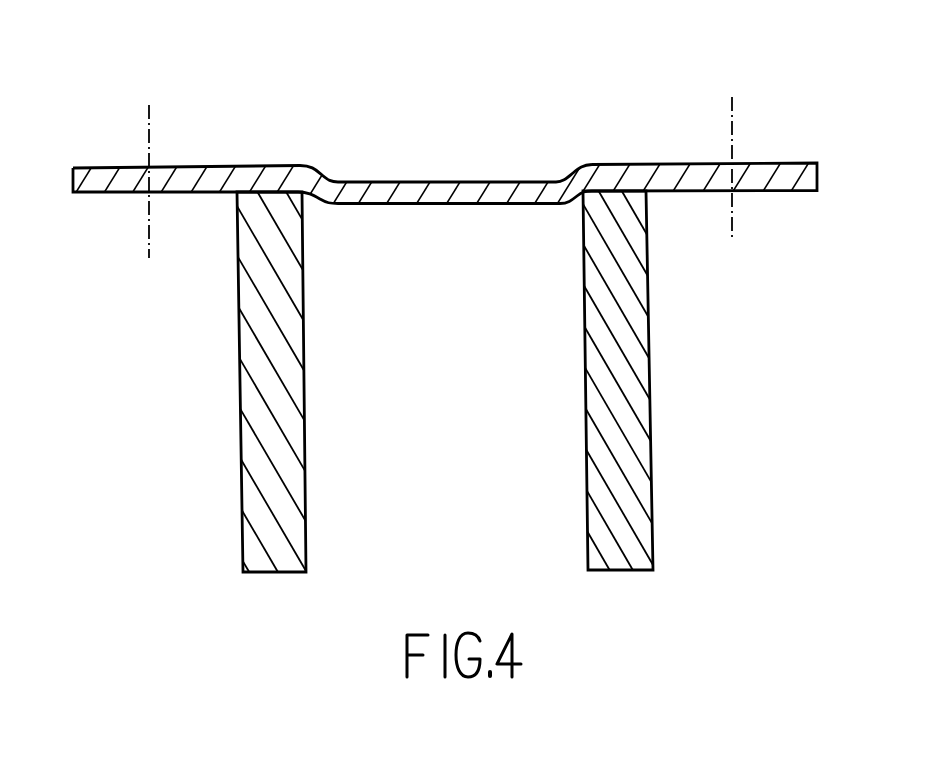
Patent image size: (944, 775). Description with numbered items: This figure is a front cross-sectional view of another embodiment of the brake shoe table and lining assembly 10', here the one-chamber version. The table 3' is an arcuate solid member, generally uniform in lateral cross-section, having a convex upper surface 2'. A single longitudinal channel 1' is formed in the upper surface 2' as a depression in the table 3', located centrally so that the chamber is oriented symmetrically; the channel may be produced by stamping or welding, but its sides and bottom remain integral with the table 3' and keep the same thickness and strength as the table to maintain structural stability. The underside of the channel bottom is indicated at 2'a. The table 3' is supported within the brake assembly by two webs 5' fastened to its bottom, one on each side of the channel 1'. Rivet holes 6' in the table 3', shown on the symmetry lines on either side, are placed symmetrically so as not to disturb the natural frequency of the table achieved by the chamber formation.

The longitudinal channel 1' is at (458, 138).
The upper surface 2' is at (445, 140).
The underside of recessed portion 2'a is at (449, 277).
The table 3' is at (449, 108).
The web 5' is at (501, 381).
The rivet holes 6' is at (440, 147).
The profile assembly 10' is at (113, 568).